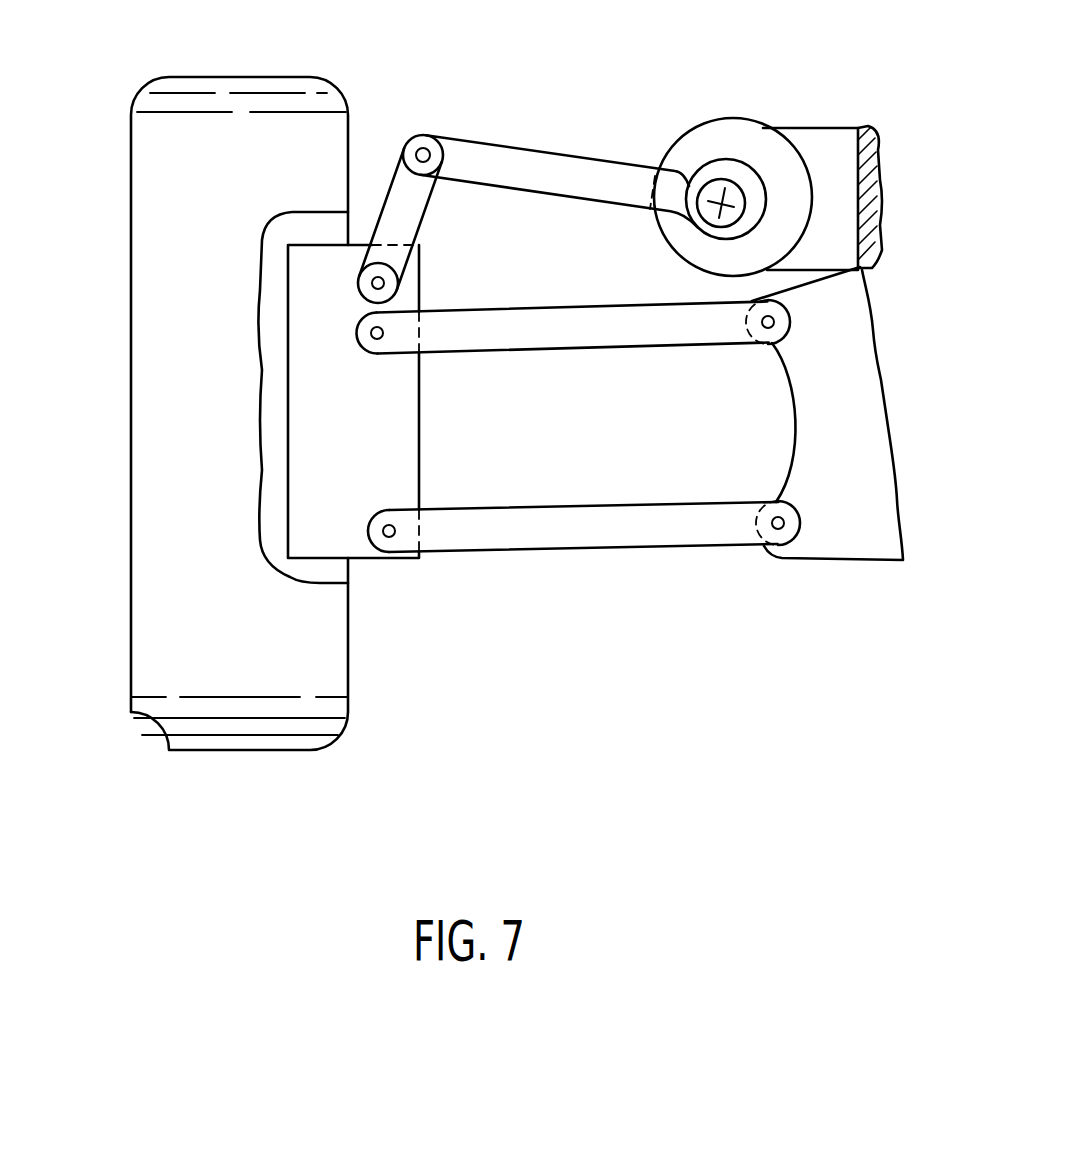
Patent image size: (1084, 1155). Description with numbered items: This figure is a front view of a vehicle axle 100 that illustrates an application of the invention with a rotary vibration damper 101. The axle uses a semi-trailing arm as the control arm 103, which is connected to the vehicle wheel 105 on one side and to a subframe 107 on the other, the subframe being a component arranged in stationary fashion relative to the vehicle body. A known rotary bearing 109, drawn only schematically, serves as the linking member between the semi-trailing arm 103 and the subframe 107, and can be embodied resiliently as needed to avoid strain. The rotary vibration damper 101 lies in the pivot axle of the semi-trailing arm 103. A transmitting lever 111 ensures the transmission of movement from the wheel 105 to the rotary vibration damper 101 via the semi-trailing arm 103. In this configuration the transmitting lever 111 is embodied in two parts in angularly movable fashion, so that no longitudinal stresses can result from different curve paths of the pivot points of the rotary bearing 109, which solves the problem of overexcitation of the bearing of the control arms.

The vehicle axle 100 is at (680, 653).
The rotary vibration damper 101 is at (743, 138).
The control arm 103 is at (573, 527).
The vehicle wheel 105 is at (288, 710).
The subframe 107 is at (796, 420).
The rotary bearing 109 is at (382, 283).
The transmitting lever 111 is at (515, 163).